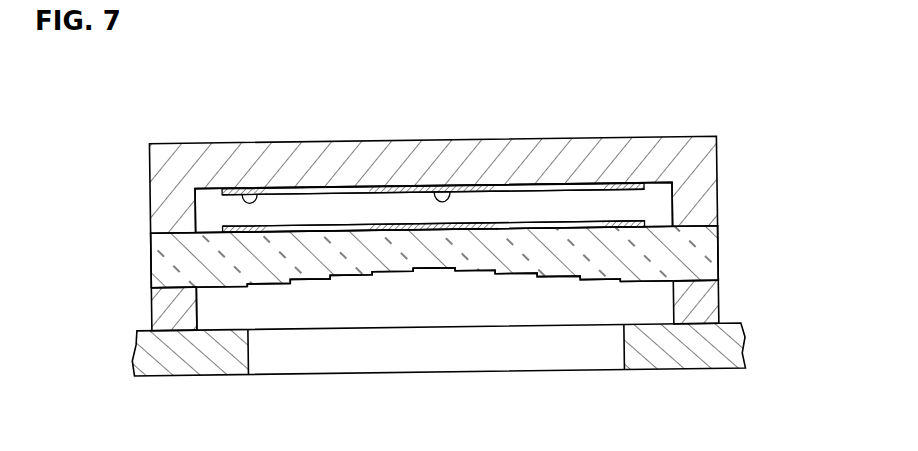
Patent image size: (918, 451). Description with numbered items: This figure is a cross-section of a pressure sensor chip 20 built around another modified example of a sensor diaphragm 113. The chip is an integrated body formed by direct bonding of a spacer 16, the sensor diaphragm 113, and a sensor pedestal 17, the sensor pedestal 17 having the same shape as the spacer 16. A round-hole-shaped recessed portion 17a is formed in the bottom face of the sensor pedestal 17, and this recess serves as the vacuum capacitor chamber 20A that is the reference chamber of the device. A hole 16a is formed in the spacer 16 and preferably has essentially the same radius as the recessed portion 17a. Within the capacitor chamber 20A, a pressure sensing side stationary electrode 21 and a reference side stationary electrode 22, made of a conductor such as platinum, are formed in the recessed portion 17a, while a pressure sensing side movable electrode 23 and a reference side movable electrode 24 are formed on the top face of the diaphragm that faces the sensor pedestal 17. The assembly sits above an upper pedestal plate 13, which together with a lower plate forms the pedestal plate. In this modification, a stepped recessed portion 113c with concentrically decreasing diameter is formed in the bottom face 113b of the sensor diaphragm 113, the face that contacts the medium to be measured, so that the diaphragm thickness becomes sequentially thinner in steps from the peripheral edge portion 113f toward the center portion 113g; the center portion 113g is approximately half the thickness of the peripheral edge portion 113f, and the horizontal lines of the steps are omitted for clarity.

The upper pedestal plate 13 is at (683, 358).
The spacer 16 is at (180, 317).
The hole 16a is at (198, 314).
The sensor pedestal 17 is at (192, 152).
The recessed portion 17a is at (197, 207).
The pressure sensor chip 20 is at (433, 134).
The capacitor chamber 20A is at (336, 209).
The pressure sensing side stationary electrode 21 is at (441, 192).
The reference side stationary electrode 22 is at (252, 193).
The pressure sensing side movable electrode 23 is at (463, 222).
The reference side movable electrode 24 is at (262, 225).
The sensor diaphragm 113 is at (435, 336).
The bottom face 113b is at (343, 284).
The recessed portion 113c is at (403, 279).
The peripheral edge portion 113f is at (207, 260).
The center portion 113g is at (443, 252).